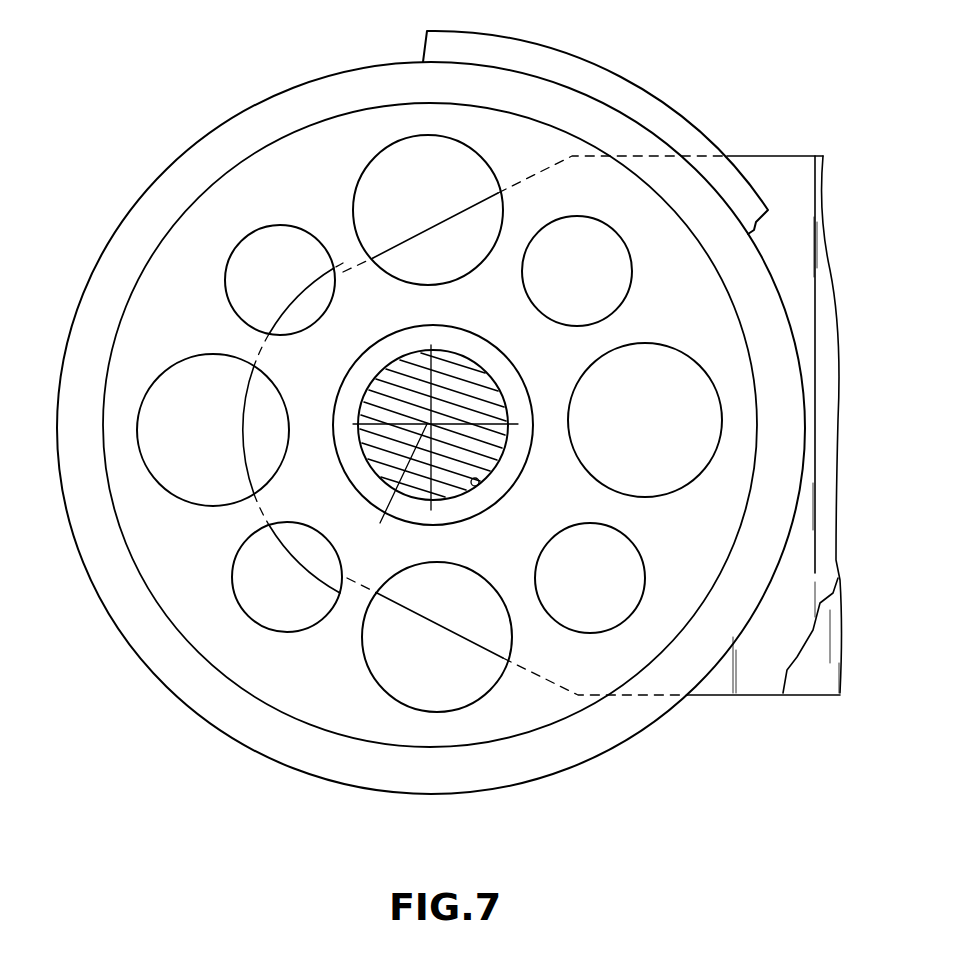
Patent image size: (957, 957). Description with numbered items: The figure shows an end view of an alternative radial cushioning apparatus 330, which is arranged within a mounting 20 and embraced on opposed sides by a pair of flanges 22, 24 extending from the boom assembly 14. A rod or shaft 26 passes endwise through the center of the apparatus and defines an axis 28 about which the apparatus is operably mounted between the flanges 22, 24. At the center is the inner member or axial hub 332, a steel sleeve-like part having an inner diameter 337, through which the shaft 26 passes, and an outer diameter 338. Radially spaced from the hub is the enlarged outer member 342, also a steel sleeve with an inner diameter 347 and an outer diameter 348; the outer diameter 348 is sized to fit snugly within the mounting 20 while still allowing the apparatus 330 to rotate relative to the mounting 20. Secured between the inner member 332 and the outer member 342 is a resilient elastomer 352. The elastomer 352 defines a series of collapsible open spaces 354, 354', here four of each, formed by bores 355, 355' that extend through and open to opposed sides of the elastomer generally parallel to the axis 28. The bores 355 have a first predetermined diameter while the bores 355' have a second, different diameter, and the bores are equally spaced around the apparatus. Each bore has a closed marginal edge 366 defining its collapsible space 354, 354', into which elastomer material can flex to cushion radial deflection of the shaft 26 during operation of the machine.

The boom assembly 14 is at (757, 724).
The mounting 20 is at (488, 45).
The flange 22 is at (815, 686).
The flange 24 is at (772, 168).
The rod or shaft 26 is at (468, 390).
The axis 28 is at (393, 491).
The radial cushioning apparatus 330 is at (151, 152).
The inner member or axial hub 332 is at (400, 337).
The inner diameter 337 is at (479, 484).
The outer diameter 338 is at (338, 395).
The outer member 342 is at (288, 747).
The inner diameter 347 is at (524, 718).
The outer diameter 348 is at (186, 706).
The resilient elastomer 352 is at (124, 581).
The open space 354 is at (436, 423).
The open space 354' is at (362, 424).
The bore 355 is at (464, 563).
The bore 355' is at (436, 426).
The closed marginal edge 366 is at (496, 180).